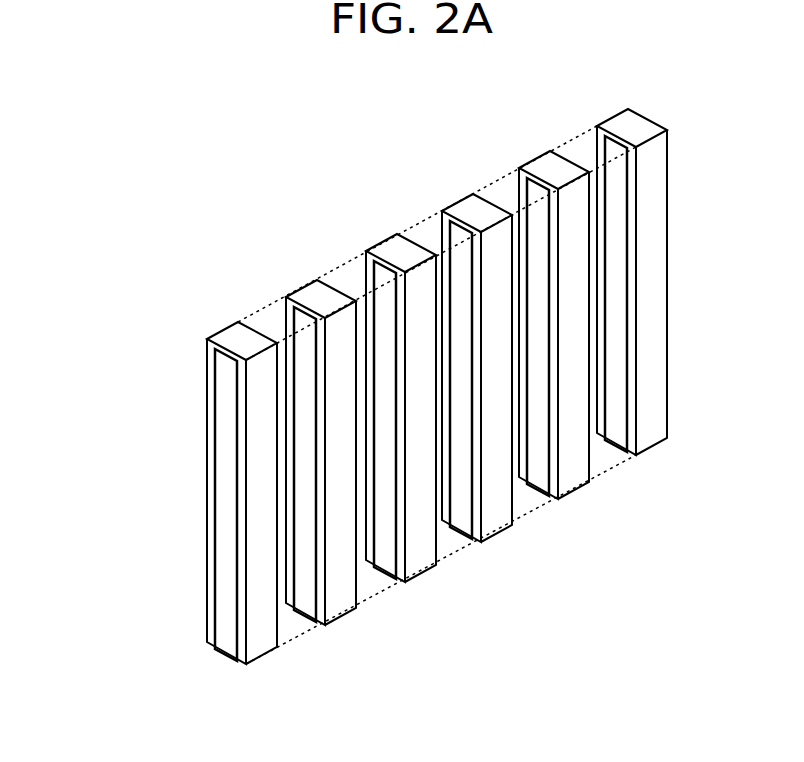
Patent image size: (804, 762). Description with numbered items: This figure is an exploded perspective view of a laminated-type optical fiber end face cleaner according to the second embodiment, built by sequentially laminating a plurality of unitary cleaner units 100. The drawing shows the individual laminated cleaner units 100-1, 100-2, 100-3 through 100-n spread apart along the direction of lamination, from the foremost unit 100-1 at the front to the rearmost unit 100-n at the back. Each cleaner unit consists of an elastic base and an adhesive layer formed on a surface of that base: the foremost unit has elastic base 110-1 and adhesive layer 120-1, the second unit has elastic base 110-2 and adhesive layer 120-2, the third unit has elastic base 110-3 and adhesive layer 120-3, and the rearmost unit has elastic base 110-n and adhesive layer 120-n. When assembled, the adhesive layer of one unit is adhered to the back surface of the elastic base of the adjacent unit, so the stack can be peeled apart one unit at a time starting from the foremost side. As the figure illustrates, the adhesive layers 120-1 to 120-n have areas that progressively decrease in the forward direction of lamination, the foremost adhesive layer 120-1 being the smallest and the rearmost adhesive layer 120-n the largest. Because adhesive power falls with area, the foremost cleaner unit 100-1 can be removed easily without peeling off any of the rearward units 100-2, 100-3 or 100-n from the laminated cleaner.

The cleaner unit 100 is at (392, 392).
The foremost cleaner unit 100-1 is at (167, 503).
The second cleaner unit 100-2 is at (247, 439).
The third cleaner unit 100-3 is at (388, 383).
The rearmost cleaner unit 100-n is at (679, 288).
The elastic base of foremost cleaner unit 110-1 is at (267, 646).
The elastic base of second cleaner unit 110-2 is at (343, 605).
The elastic base of third cleaner unit 110-3 is at (427, 568).
The elastic base of rearmost cleaner unit 110-n is at (650, 435).
The foremost adhesive layer 120-1 is at (222, 584).
The adhesive layer of second cleaner unit 120-2 is at (303, 572).
The adhesive layer of third cleaner unit 120-3 is at (380, 573).
The rearmost adhesive layer 120-n is at (613, 437).